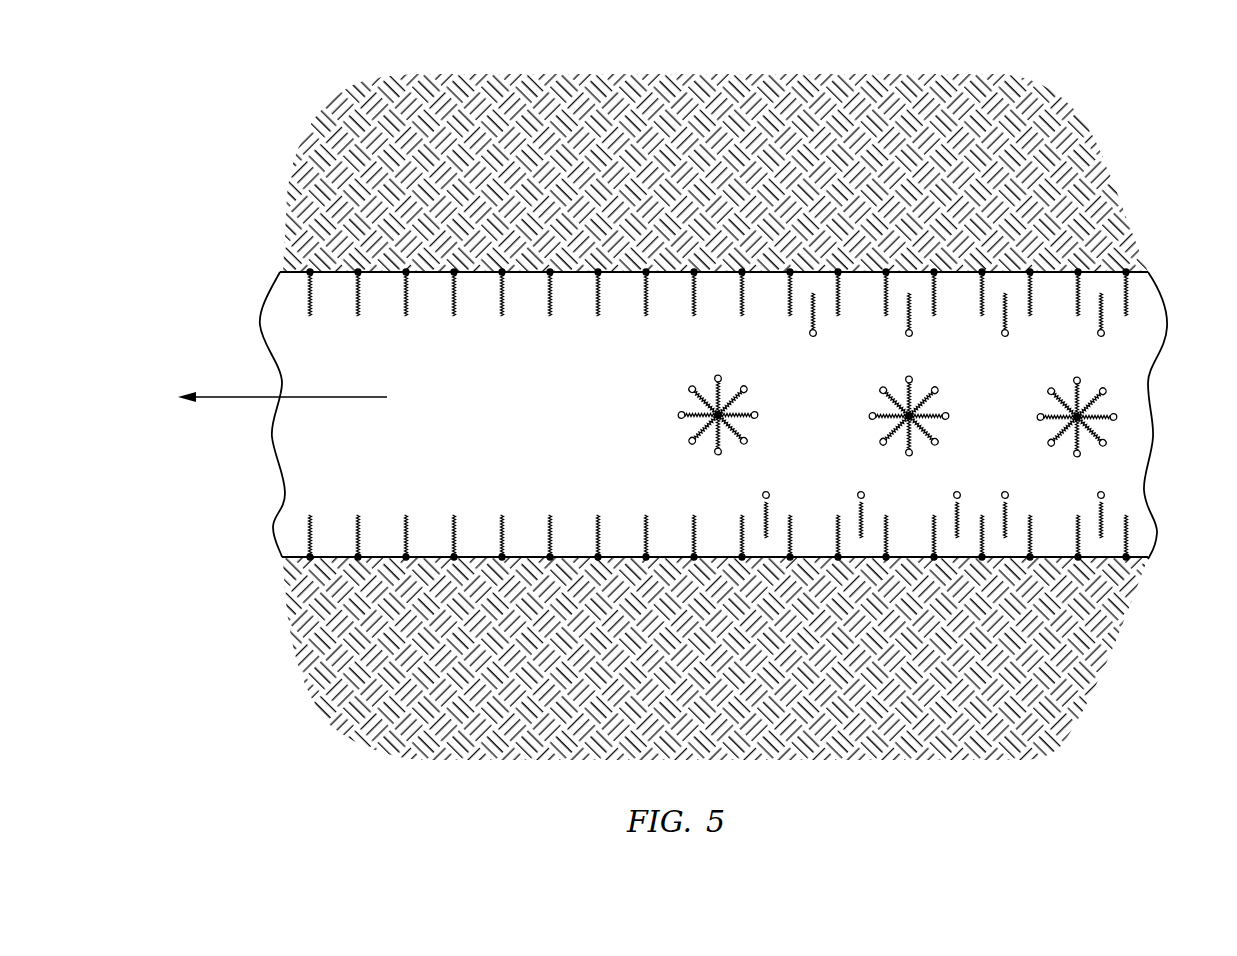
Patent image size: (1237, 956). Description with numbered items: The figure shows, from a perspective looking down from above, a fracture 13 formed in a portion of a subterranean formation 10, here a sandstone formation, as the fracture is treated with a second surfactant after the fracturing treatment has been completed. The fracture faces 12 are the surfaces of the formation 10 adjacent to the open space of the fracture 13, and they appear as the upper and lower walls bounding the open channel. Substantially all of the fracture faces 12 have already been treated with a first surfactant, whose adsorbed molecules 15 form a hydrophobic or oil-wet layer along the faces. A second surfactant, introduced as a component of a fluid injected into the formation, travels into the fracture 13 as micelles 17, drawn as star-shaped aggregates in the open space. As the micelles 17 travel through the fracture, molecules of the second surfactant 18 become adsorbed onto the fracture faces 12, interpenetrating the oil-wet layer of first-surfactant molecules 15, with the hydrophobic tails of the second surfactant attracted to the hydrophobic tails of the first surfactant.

The subterranean formation 10 is at (785, 187).
The fracture faces 12 is at (380, 272).
The fracture 13 is at (352, 361).
The molecules of the first surfactant 15 is at (1128, 297).
The micelles of the second surfactant 17 is at (946, 413).
The molecules of the second surfactant 18 is at (1103, 323).